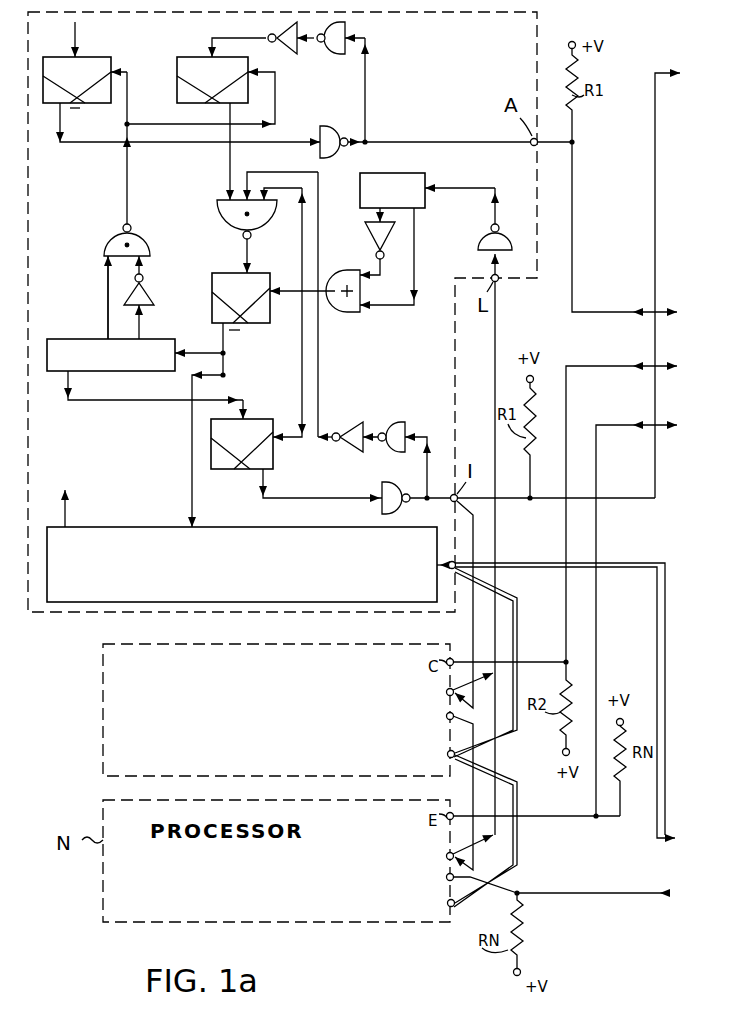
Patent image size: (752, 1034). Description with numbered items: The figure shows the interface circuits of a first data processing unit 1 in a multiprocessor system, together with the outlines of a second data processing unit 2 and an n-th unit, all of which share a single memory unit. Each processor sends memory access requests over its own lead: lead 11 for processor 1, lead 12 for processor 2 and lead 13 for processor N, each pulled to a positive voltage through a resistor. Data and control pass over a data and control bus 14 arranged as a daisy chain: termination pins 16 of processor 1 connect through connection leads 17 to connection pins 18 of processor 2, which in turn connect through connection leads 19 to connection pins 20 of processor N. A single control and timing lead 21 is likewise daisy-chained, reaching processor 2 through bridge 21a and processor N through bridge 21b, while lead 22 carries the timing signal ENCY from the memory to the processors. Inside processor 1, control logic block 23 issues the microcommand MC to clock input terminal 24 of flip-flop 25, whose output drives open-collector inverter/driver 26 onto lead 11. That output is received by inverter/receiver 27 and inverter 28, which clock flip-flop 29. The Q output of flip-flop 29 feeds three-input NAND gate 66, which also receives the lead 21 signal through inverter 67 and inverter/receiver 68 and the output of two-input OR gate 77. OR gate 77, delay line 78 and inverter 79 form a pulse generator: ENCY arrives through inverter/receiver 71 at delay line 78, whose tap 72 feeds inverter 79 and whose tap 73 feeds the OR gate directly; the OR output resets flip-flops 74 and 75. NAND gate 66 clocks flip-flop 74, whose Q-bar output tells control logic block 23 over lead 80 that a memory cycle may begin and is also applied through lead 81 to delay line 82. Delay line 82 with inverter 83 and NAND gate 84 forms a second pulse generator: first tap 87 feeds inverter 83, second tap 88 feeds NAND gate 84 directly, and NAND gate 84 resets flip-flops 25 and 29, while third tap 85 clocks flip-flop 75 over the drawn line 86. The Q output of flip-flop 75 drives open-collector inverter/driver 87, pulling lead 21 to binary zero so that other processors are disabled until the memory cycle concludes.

The first data processing unit 1 is at (503, 283).
The second data processing unit 2 is at (103, 708).
The lead 11 is at (619, 309).
The lead 12 is at (620, 366).
The lead 13 is at (626, 424).
The data and control bus 14 is at (656, 830).
The termination pins 16 is at (448, 563).
The connection leads 17 is at (518, 620).
The connection pins 18 is at (447, 754).
The connection leads 19 is at (518, 834).
The connection pins 20 is at (446, 902).
The control and timing lead 21 is at (645, 496).
The bridge lead 21a is at (474, 538).
The bridge lead 21b is at (478, 754).
The lead 22 is at (588, 896).
The control logic block 23 is at (122, 527).
The clock input terminal 24 is at (70, 55).
The flip-flop 25 is at (111, 62).
The inverter/driver 26 is at (331, 126).
The inverter/receiver 27 is at (348, 27).
The inverter 28 is at (292, 58).
The flip-flop 29 is at (192, 56).
The three-input NAND gate 66 is at (220, 222).
The inverter 67 is at (352, 422).
The inverter/receiver 68 is at (396, 422).
The inverter/receiver 71 is at (488, 235).
The tap 72 is at (368, 223).
The tap 73 is at (417, 212).
The flip-flop 74 is at (212, 278).
The flip-flop 75 is at (273, 454).
The two-input OR gate 77 is at (345, 314).
The delay line 78 is at (392, 170).
The inverter 79 is at (363, 246).
The lead 80 is at (191, 454).
The lead 81 is at (199, 334).
The delay line 82 is at (56, 336).
The inverter 83 is at (147, 284).
The NAND gate 84 is at (140, 232).
The third tap 85 is at (64, 376).
The line 86 is at (118, 402).
The first tap / inverter/driver 87 is at (143, 336).
The second tap 88 is at (108, 337).